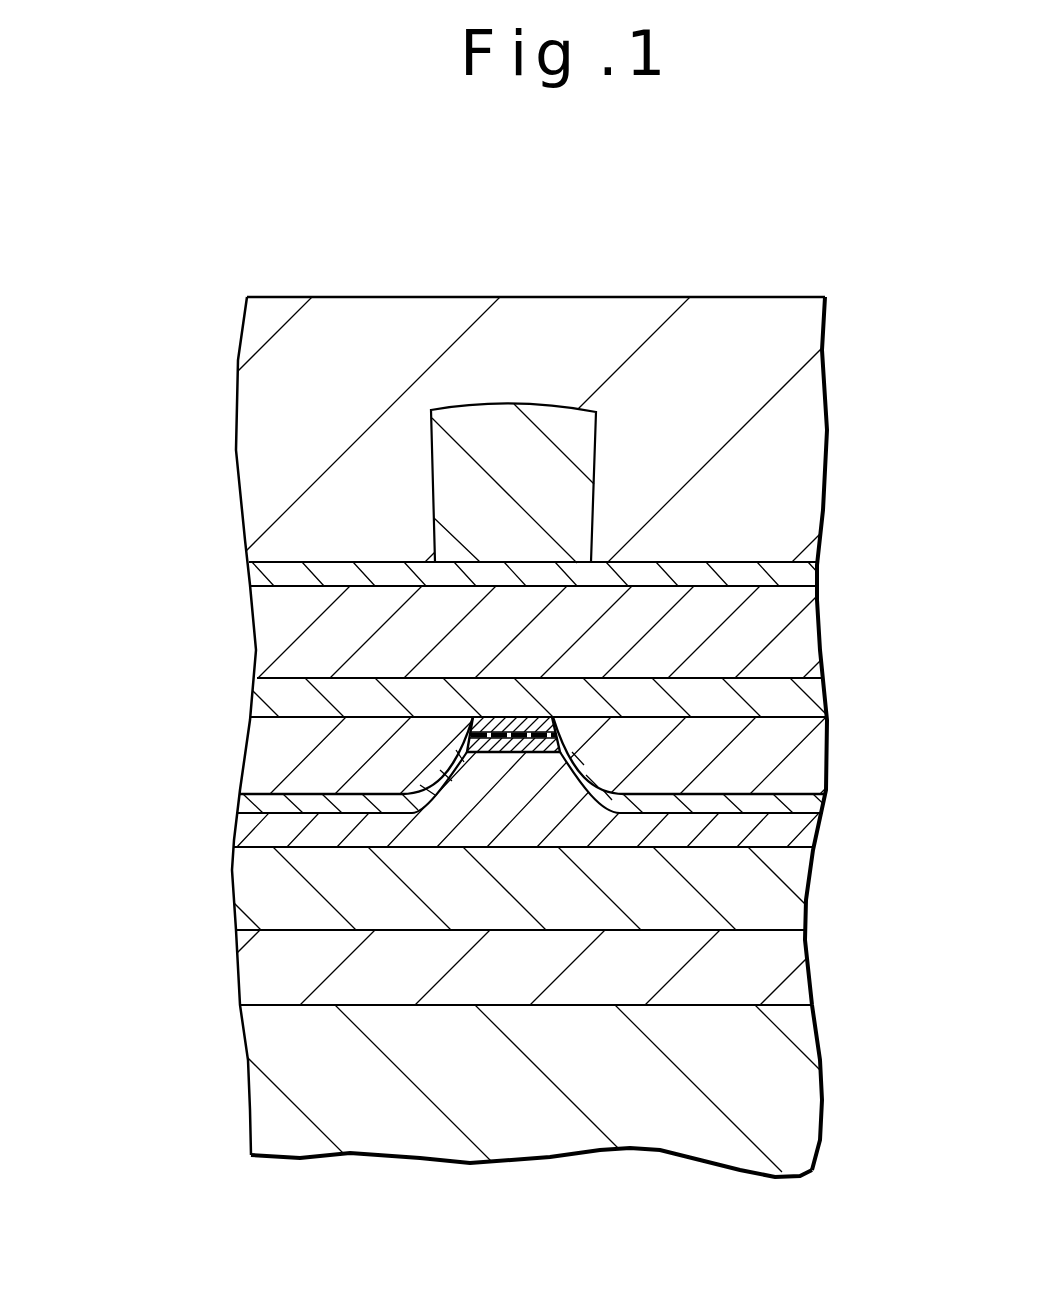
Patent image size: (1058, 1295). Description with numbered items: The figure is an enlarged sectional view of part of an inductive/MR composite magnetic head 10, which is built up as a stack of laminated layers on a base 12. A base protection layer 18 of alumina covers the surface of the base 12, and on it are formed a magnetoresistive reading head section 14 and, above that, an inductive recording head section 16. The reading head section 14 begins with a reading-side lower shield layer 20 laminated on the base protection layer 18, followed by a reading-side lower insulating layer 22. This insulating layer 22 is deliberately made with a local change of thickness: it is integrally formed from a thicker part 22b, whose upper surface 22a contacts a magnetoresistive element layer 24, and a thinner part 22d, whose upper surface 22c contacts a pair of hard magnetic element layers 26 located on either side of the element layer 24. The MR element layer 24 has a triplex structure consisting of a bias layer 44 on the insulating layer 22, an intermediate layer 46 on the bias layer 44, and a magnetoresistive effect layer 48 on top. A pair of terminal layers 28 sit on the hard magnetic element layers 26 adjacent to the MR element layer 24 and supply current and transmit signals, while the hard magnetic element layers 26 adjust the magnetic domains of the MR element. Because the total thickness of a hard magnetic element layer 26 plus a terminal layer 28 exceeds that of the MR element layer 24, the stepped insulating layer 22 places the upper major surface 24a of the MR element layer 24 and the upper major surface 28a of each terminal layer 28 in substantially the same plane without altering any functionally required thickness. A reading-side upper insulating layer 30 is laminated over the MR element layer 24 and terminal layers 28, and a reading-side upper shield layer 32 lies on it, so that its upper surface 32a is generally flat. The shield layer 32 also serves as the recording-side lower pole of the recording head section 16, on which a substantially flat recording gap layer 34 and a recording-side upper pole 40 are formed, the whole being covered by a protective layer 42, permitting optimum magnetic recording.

The magnetic head 10 is at (586, 268).
The base 12 is at (793, 1085).
The magnetoresistive reading head section 14 is at (140, 658).
The inductive recording head section 16 is at (140, 460).
The base protection layer 18 is at (780, 985).
The reading-side lower shield layer 20 is at (785, 910).
The reading-side lower insulating layer 22 is at (812, 840).
The upper surface of thicker part 22a is at (470, 735).
The thicker part 22b is at (488, 773).
The upper surface of thinner part 22c is at (282, 806).
The thinner part 22d is at (308, 823).
The magnetoresistive element layer 24 is at (897, 697).
The upper major surface of MR element layer 24a is at (512, 717).
The hard magnetic element layer 26 is at (348, 802).
The terminal layer 28 is at (290, 733).
The upper major surface of terminal layer 28a is at (300, 708).
The reading-side upper insulating layer 30 is at (760, 712).
The reading-side upper shield layer 32 is at (790, 622).
The upper surface of upper shield layer 32a is at (365, 586).
The recording gap layer 34 is at (798, 580).
The recording-side upper pole 40 is at (563, 505).
The protective layer 42 is at (790, 388).
The bias layer 44 is at (563, 750).
The intermediate layer 46 is at (558, 736).
The magnetoresistive effect layer 48 is at (556, 724).